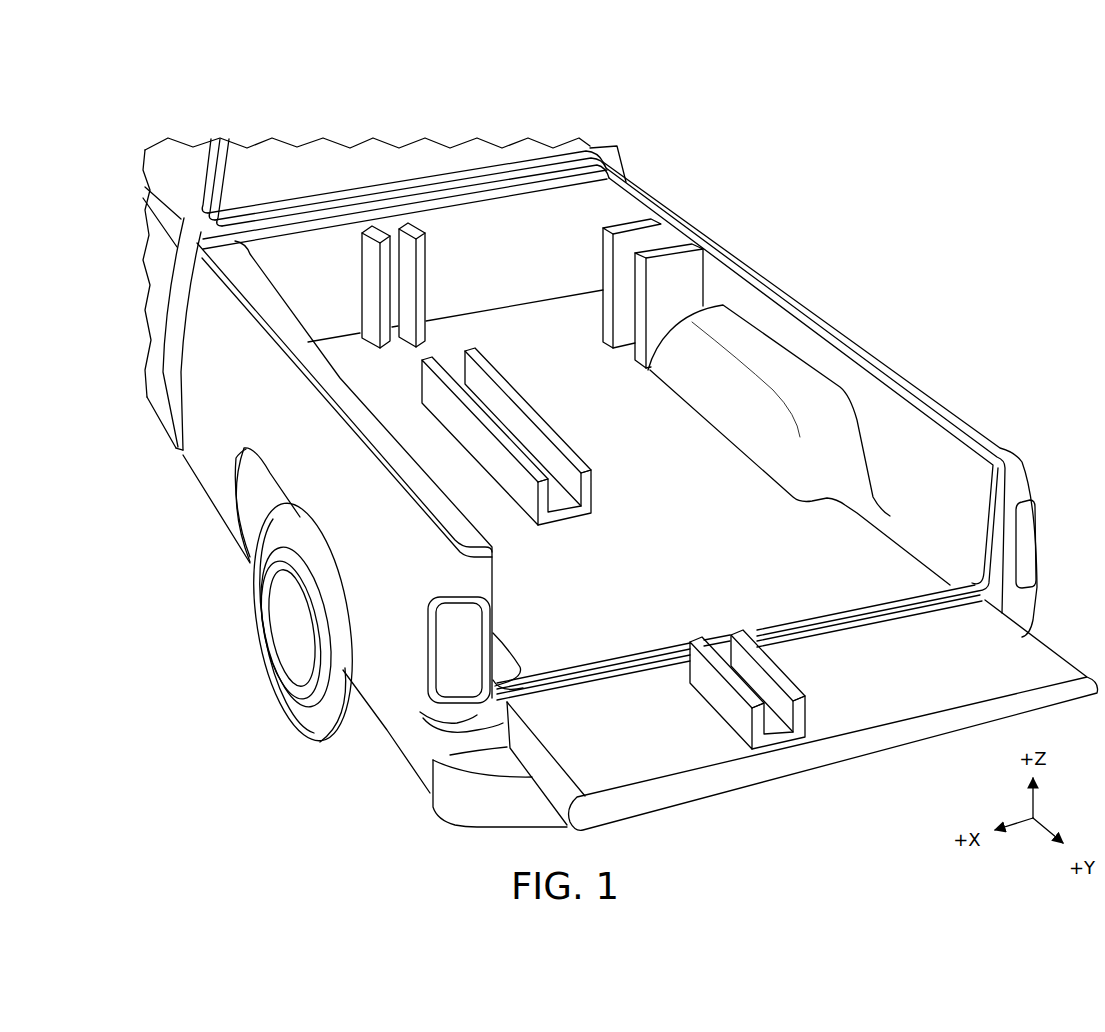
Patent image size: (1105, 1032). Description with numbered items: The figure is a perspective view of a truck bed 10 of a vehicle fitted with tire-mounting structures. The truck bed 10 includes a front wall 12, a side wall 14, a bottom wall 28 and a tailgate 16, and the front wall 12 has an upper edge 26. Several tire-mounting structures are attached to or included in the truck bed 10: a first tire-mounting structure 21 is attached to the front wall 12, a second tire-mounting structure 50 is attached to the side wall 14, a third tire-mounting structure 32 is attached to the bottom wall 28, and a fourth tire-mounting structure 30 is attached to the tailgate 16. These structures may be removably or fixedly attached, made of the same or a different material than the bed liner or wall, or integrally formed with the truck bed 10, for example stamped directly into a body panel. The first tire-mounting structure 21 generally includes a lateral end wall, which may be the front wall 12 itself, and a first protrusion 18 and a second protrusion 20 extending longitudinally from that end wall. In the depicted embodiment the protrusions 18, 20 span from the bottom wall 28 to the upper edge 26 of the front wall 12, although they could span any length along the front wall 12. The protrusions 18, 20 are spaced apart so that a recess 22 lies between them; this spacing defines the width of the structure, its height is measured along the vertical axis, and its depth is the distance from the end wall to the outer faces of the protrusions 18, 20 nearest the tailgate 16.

The truck bed 10 is at (106, 126).
The front wall 12 is at (266, 266).
The side wall 14 is at (882, 388).
The tailgate 16 is at (1050, 653).
The first protrusion 18 is at (369, 278).
The second protrusion 20 is at (421, 257).
The first tire-mounting structure 21 is at (444, 286).
The recess 22 is at (376, 228).
The upper edge 26 is at (300, 234).
The bottom wall 28 is at (905, 578).
The fourth tire-mounting structure 30 is at (832, 703).
The third tire-mounting structure 32 is at (586, 530).
The second tire-mounting structure 50 is at (666, 236).